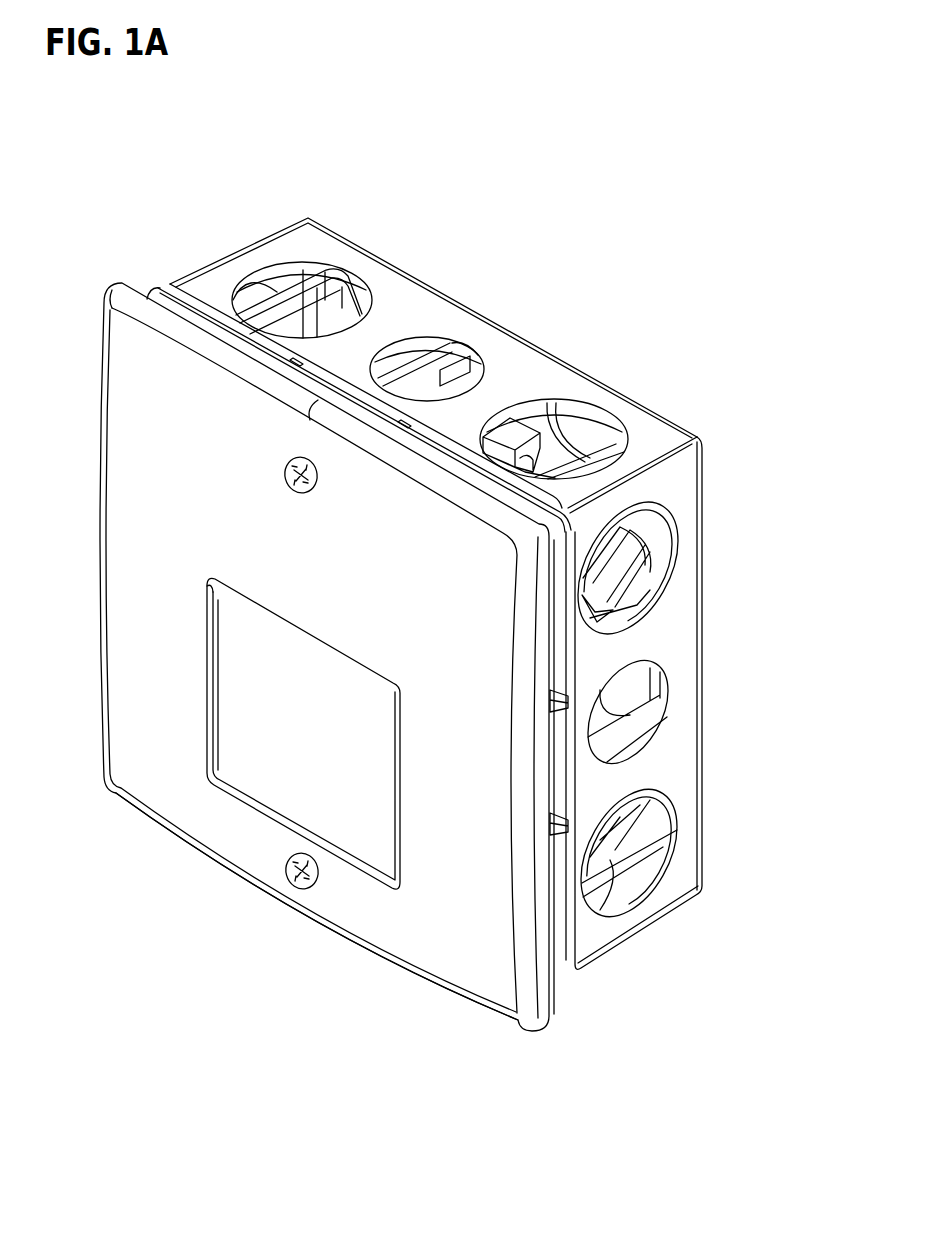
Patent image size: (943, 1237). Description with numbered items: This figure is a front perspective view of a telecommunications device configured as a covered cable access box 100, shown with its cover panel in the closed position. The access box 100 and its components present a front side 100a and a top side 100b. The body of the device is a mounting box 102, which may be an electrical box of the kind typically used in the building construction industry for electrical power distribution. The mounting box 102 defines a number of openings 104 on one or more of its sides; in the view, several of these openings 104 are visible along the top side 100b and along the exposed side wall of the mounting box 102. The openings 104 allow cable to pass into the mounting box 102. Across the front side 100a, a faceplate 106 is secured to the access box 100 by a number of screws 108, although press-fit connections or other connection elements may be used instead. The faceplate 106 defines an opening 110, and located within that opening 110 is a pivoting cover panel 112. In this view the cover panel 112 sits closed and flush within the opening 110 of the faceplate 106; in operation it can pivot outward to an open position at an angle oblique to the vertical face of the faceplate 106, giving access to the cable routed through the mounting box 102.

The covered cable access box 100 is at (476, 562).
The front side 100a is at (182, 860).
The top side 100b is at (474, 536).
The mounting box 102 is at (678, 480).
The openings 104 is at (583, 428).
The faceplate 106 is at (308, 657).
The screws 108 is at (307, 493).
The opening 110 is at (348, 733).
The cover panel 112 is at (323, 745).